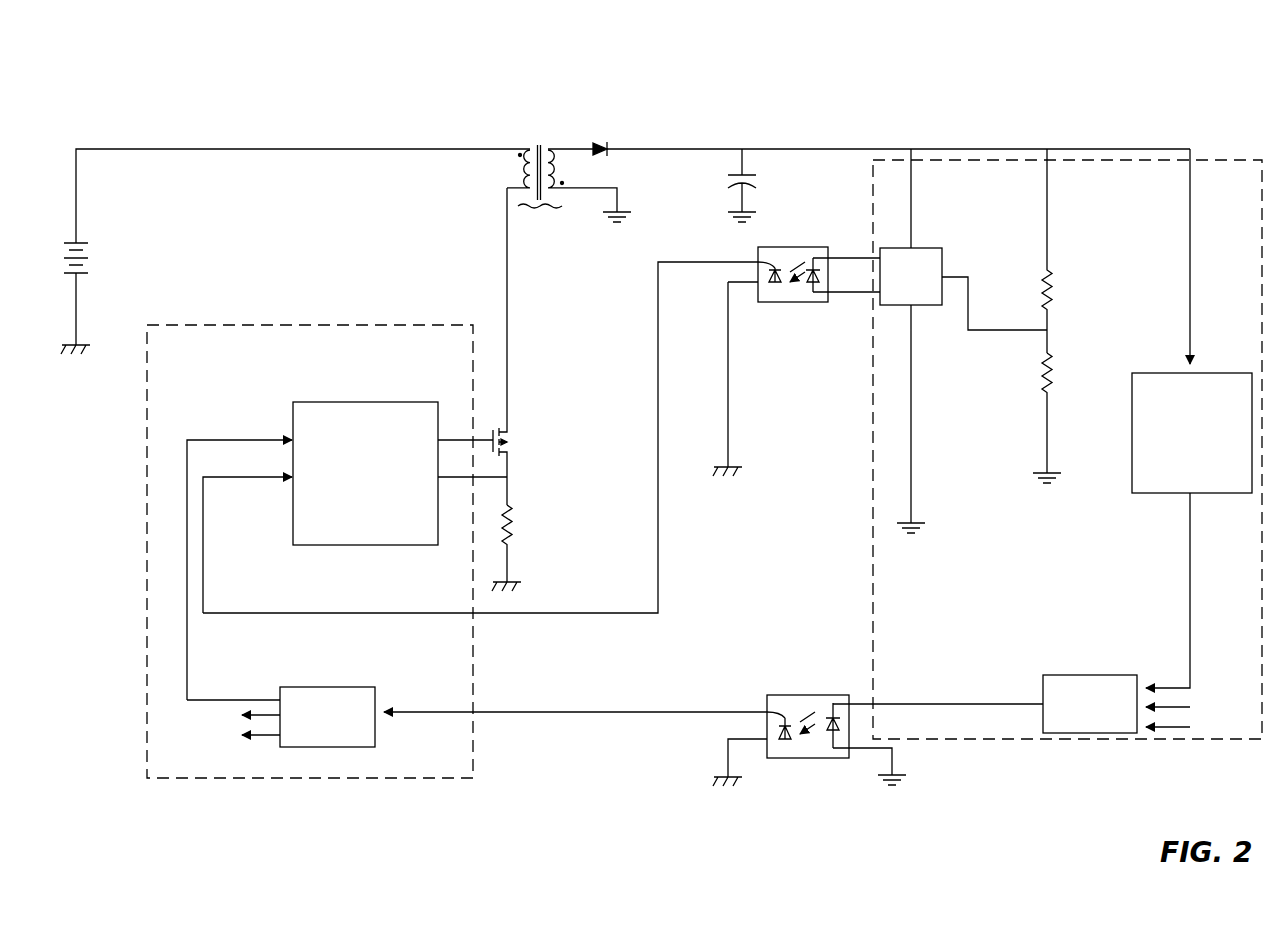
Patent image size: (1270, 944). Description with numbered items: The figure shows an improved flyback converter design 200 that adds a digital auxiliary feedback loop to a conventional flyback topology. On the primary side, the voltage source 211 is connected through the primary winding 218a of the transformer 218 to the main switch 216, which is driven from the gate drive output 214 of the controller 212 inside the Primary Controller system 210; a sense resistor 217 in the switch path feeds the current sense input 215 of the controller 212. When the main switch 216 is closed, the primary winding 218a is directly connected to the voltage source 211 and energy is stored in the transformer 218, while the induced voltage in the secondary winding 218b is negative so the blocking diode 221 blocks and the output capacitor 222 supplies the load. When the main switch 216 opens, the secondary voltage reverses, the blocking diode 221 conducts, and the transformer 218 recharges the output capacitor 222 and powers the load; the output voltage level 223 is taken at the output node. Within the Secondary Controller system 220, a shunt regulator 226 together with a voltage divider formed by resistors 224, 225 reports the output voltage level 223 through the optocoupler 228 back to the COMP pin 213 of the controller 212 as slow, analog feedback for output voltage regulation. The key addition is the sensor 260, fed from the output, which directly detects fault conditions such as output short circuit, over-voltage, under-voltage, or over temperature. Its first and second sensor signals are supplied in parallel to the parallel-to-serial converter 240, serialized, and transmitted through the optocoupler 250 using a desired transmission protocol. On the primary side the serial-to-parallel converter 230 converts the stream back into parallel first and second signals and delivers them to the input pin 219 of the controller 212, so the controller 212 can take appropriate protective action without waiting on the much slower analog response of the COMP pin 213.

The improved flyback converter design 200 is at (167, 78).
The Primary Controller system 210 is at (185, 779).
The voltage source 211 is at (108, 236).
The controller 212 is at (344, 452).
The COMP pin 213 is at (306, 492).
The gate drive output 214 is at (357, 432).
The current sense input 215 is at (425, 492).
The main switch 216 is at (514, 393).
The sense resistor 217 is at (526, 502).
The transformer 218 is at (549, 180).
The primary winding 218a is at (530, 146).
The secondary winding 218b is at (548, 146).
The input pin 219 is at (273, 422).
The Secondary Controller system 220 is at (1011, 741).
The blocking diode 221 is at (608, 134).
The output capacitor 222 is at (748, 162).
The output voltage level 223 is at (1163, 122).
The resistor 224 is at (1053, 270).
The resistor 225 is at (1053, 354).
The shunt regulator 226 is at (918, 242).
The optocoupler 228 is at (787, 240).
The serial-to-parallel converter 230 is at (312, 683).
The parallel-to-serial converter 240 is at (1076, 670).
The optocoupler 250 is at (784, 684).
The sensor 260 is at (1170, 372).